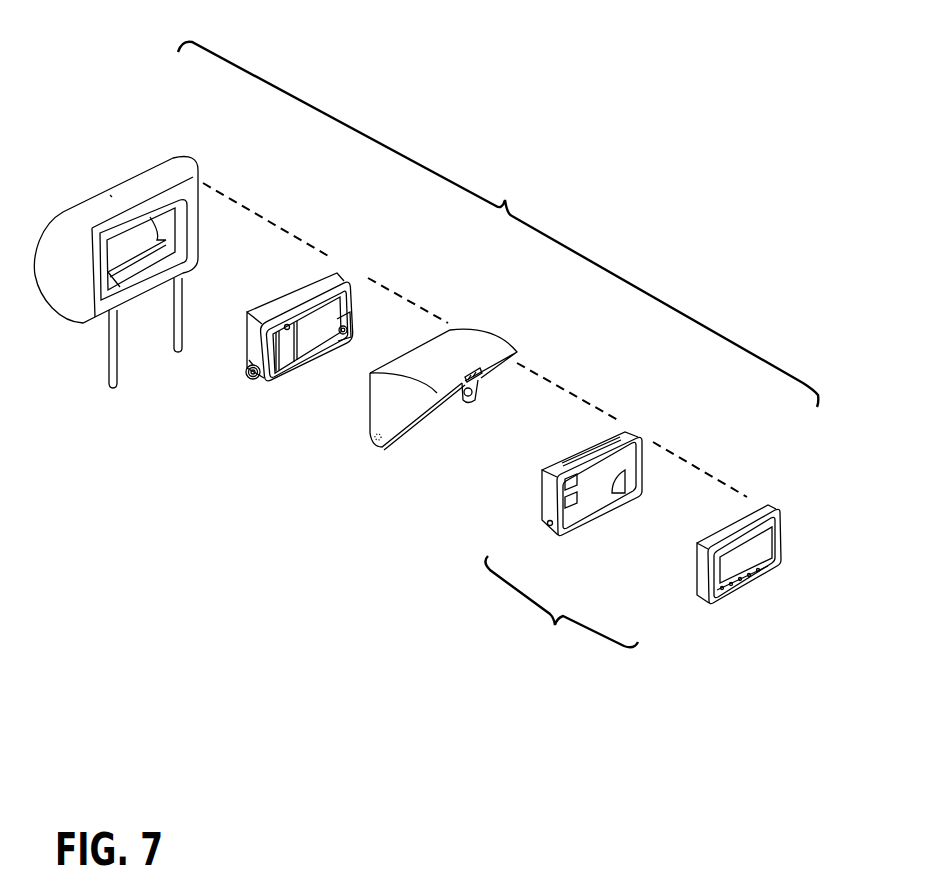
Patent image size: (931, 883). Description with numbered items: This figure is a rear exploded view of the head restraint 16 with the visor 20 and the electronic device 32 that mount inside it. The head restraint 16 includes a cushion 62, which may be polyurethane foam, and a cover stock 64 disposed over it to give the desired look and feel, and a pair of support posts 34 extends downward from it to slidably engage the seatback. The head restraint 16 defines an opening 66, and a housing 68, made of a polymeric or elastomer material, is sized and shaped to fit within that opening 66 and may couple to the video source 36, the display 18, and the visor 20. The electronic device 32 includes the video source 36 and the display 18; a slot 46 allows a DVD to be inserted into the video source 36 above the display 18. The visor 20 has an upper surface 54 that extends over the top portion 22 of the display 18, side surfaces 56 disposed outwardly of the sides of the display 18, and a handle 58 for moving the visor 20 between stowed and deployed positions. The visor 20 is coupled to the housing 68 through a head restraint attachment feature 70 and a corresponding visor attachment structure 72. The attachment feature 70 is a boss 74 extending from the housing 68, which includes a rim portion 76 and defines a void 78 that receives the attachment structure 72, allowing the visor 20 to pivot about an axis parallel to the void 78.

The head restraint 16 is at (62, 293).
The display 18 is at (697, 575).
The visor 20 is at (506, 345).
The top portion 22 is at (743, 530).
The electronic device 32 is at (554, 623).
The support posts 34 is at (177, 352).
The video source 36 is at (547, 533).
The slot 46 is at (617, 438).
The upper surface 54 is at (433, 355).
The side surfaces 56 is at (387, 404).
The handle 58 is at (474, 377).
The cushion 62 is at (163, 216).
The cover stock 64 is at (120, 192).
The opening 66 is at (190, 224).
The housing 68 is at (323, 282).
The head restraint attachment feature 70 is at (250, 360).
The visor attachment structure 72 is at (466, 400).
The boss 74 is at (333, 333).
The rim portion 76 is at (254, 378).
The void 78 is at (247, 373).